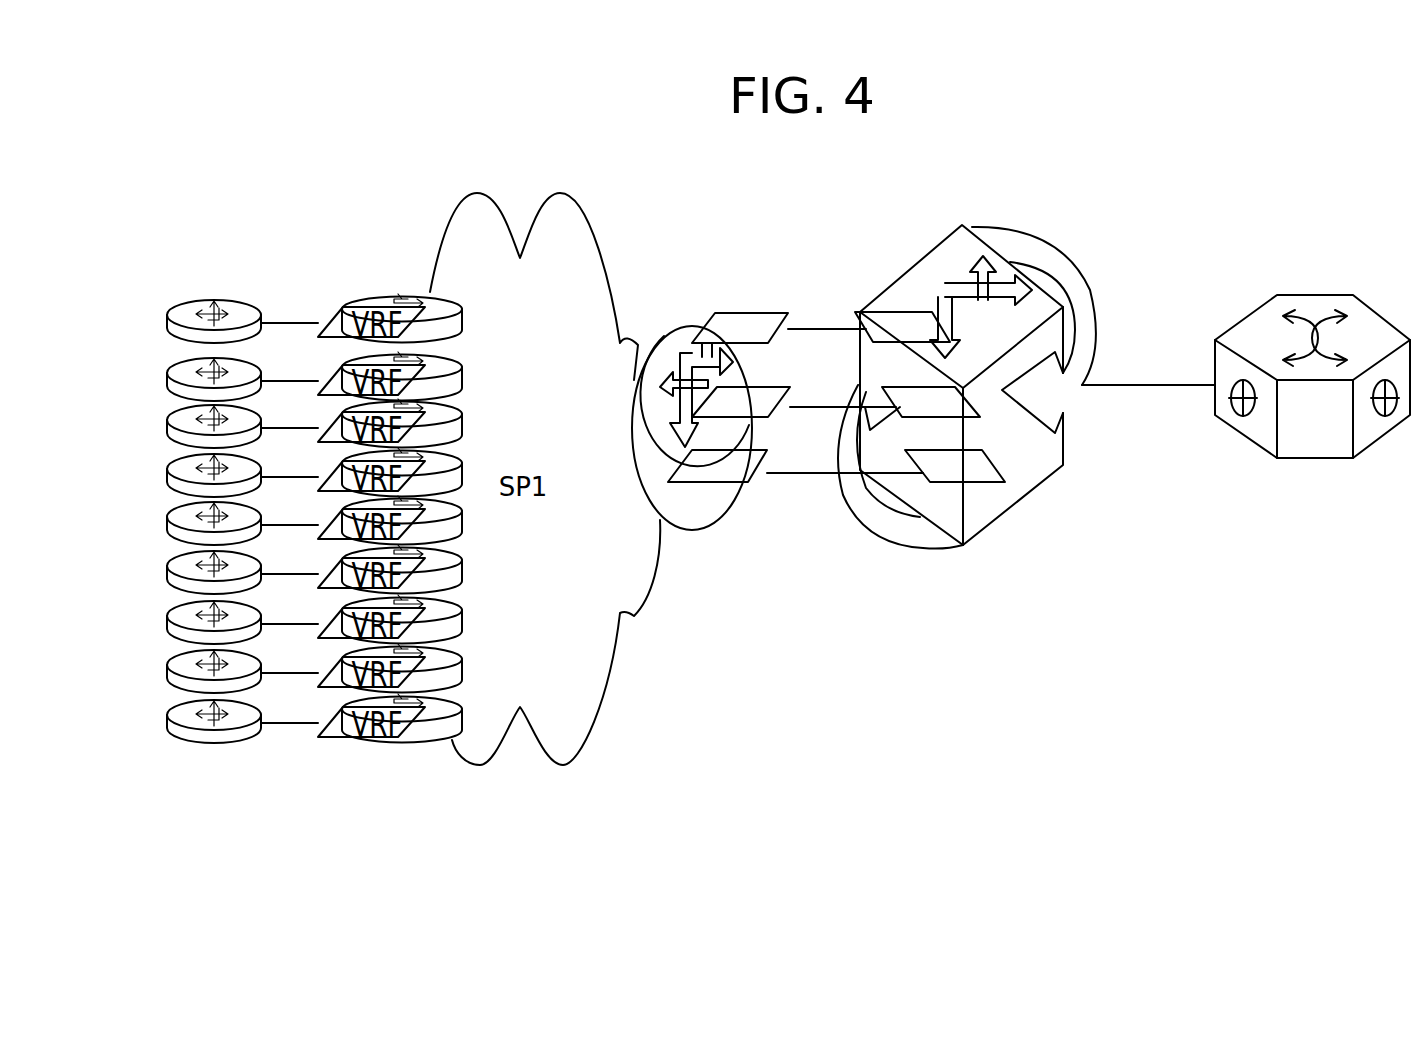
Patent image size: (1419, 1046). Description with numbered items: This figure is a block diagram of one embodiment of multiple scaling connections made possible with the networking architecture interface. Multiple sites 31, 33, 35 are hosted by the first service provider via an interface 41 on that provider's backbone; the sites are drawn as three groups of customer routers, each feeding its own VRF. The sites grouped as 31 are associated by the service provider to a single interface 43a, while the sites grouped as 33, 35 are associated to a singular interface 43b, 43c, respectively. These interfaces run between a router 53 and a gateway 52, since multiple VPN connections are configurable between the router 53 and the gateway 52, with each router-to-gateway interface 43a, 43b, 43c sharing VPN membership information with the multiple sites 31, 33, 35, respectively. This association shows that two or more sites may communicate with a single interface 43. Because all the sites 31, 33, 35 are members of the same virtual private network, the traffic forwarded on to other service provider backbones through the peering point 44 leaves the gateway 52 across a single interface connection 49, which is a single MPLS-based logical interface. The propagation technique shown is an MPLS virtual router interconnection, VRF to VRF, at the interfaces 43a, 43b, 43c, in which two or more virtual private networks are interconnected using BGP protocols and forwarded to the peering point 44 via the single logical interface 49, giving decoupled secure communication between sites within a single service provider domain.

The sites 31 is at (153, 295).
The sites 33 is at (153, 451).
The sites 35 is at (153, 598).
The interface 41 is at (276, 590).
The single interface 43 is at (822, 505).
The interface 43a is at (826, 322).
The interface 43b is at (826, 407).
The interface 43c is at (780, 482).
The peering point 44 is at (1312, 462).
The single interface connection 49 is at (1152, 398).
The gateway 52 is at (990, 527).
The router 53 is at (693, 532).